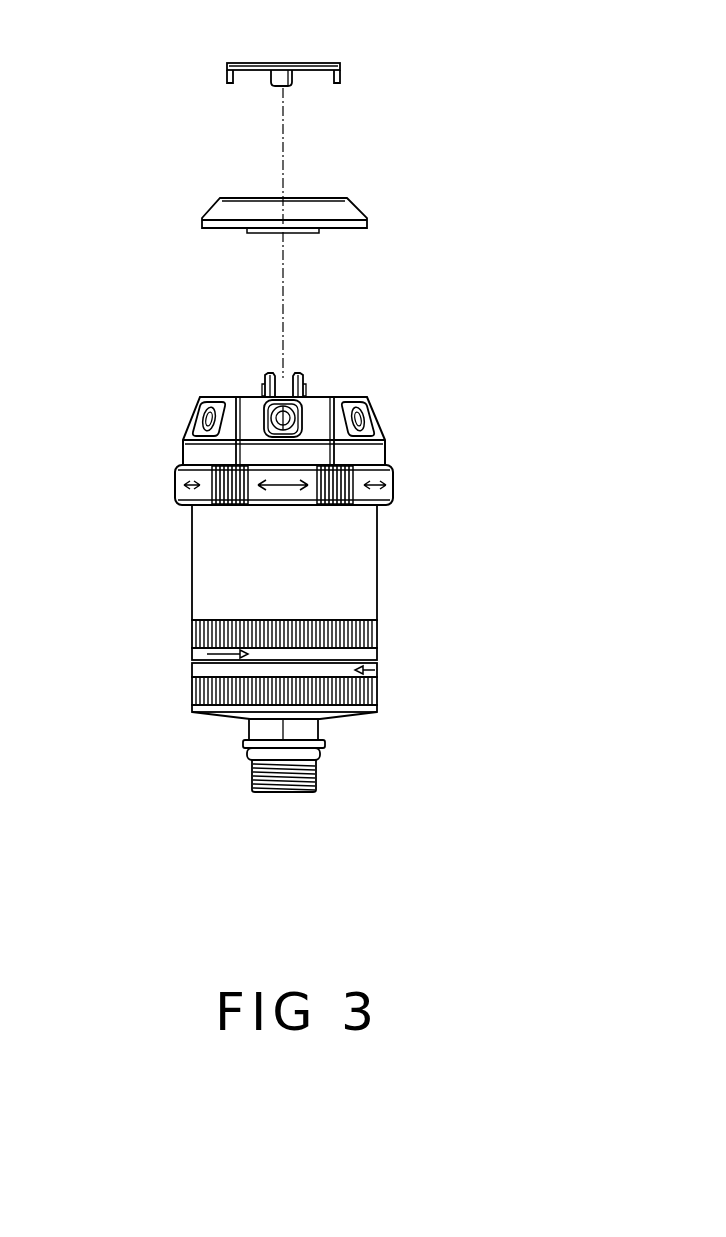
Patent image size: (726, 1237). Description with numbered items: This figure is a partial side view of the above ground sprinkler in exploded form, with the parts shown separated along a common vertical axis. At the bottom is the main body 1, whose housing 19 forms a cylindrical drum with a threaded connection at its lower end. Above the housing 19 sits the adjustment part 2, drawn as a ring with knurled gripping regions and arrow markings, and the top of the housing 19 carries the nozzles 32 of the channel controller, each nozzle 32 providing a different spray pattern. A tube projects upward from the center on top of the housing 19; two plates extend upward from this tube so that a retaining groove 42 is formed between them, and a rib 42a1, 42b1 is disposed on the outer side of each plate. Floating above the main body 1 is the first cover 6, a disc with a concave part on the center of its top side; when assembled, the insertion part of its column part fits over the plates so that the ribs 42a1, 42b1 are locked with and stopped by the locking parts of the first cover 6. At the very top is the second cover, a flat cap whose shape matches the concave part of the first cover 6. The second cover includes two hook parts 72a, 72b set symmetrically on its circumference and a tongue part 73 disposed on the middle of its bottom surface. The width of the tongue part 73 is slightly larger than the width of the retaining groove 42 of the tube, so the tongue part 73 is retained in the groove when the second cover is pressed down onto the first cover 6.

The main body 1 is at (180, 548).
The adjustment part 2 is at (395, 478).
The first cover 6 is at (208, 203).
The housing 19 is at (350, 578).
The nozzle 32 is at (200, 408).
The retaining groove 42 is at (283, 384).
The rib 42a1 is at (267, 376).
The rib 42b1 is at (302, 376).
The hook part 72a is at (228, 80).
The hook part 72b is at (343, 79).
The tongue part 73 is at (293, 84).